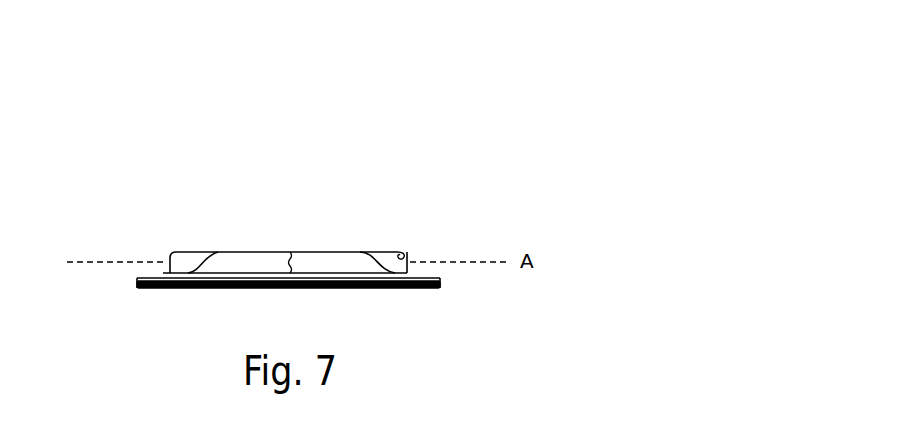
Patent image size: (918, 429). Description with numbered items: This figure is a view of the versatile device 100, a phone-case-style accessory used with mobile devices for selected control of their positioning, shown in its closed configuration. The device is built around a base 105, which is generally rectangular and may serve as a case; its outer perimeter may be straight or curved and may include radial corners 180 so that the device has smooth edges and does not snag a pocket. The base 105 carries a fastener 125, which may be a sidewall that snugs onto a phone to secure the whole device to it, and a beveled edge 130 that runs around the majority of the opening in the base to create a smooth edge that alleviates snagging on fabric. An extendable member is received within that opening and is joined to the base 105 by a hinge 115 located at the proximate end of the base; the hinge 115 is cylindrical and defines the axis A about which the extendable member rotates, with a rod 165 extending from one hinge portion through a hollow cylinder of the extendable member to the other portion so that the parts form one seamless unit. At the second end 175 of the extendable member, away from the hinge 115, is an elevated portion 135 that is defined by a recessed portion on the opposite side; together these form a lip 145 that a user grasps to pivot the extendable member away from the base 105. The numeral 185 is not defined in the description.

The versatile device 100 is at (505, 92).
The base 105 is at (165, 273).
The hinge 115 is at (407, 252).
The fastener 125 is at (177, 289).
The beveled edge 130 is at (435, 278).
The elevated portion 135 is at (329, 251).
The lip 145 is at (330, 251).
The rod 165 is at (170, 263).
The second end 175 is at (258, 273).
The radial corners 180 is at (137, 283).
The break line region 185 is at (322, 273).